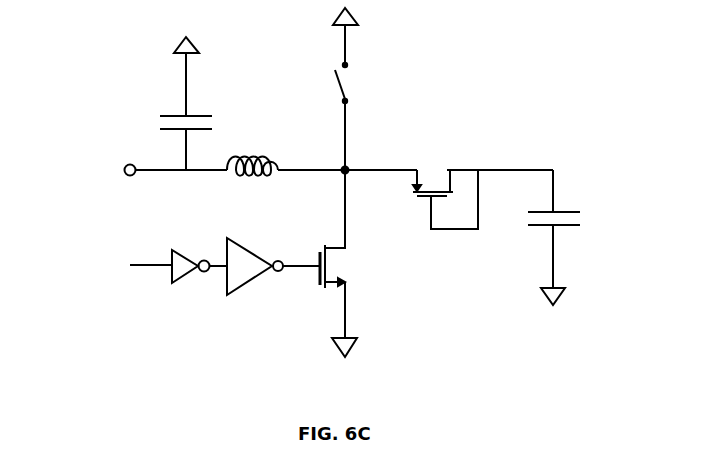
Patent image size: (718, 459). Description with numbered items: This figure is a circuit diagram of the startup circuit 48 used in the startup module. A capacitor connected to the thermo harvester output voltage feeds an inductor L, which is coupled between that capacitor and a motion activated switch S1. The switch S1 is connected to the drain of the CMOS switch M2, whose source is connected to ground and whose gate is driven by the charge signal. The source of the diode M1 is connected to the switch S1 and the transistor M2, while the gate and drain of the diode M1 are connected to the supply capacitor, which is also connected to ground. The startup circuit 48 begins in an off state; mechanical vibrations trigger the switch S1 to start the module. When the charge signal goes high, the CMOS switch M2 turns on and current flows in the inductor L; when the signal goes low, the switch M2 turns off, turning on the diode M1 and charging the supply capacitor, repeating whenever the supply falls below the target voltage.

The startup circuit 48 is at (374, 182).
The motion activated switch S1 is at (325, 83).
The diode M1 is at (445, 185).
The CMOS switch M2 is at (345, 229).
The inductor L is at (252, 154).